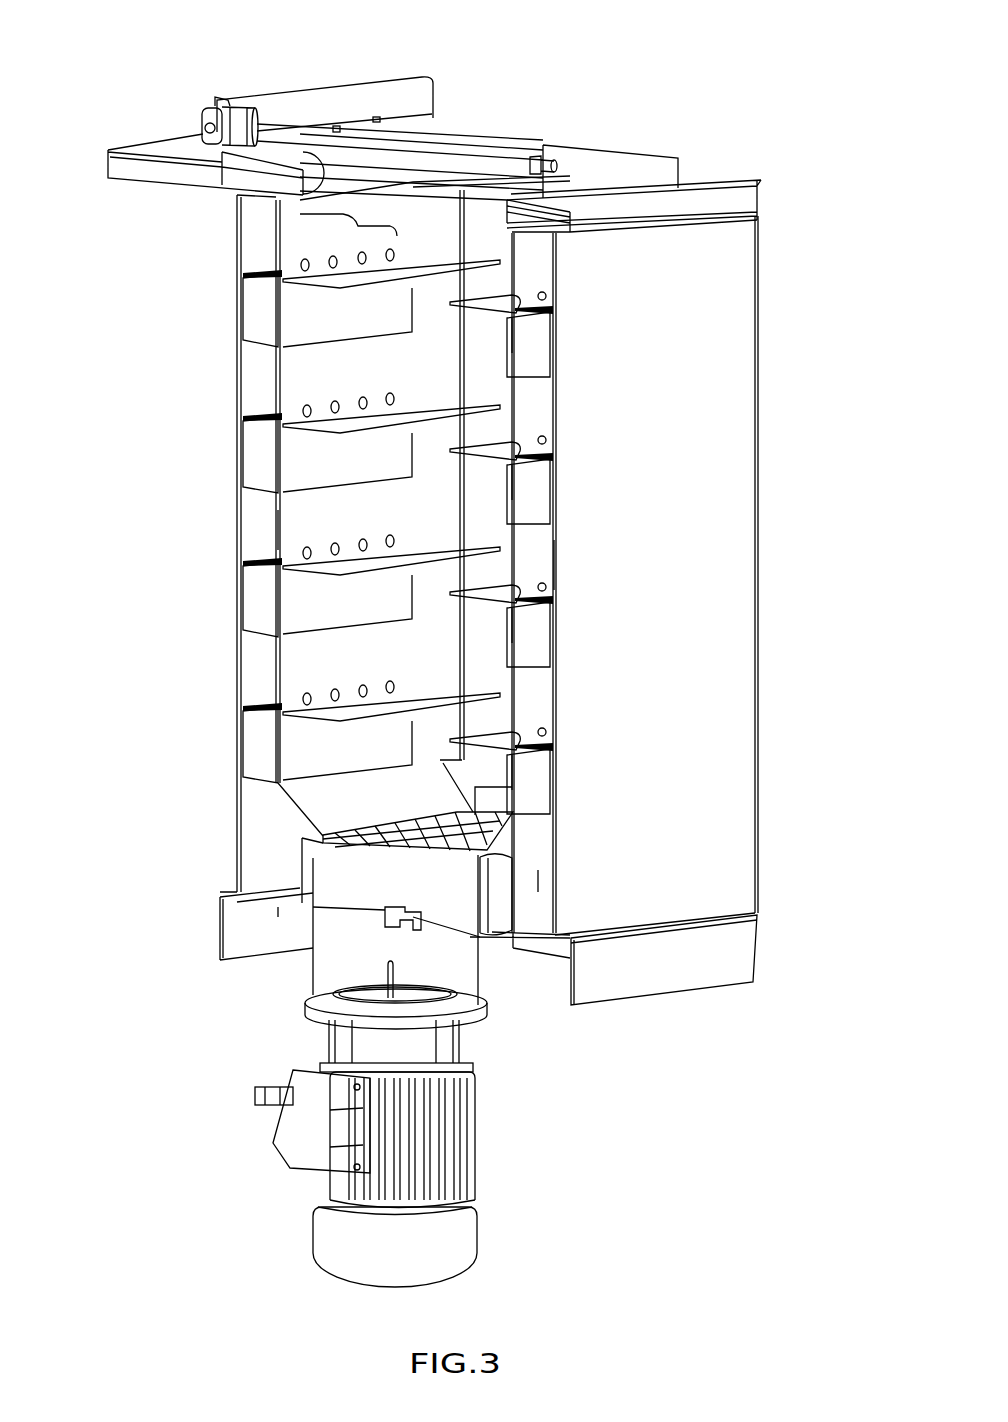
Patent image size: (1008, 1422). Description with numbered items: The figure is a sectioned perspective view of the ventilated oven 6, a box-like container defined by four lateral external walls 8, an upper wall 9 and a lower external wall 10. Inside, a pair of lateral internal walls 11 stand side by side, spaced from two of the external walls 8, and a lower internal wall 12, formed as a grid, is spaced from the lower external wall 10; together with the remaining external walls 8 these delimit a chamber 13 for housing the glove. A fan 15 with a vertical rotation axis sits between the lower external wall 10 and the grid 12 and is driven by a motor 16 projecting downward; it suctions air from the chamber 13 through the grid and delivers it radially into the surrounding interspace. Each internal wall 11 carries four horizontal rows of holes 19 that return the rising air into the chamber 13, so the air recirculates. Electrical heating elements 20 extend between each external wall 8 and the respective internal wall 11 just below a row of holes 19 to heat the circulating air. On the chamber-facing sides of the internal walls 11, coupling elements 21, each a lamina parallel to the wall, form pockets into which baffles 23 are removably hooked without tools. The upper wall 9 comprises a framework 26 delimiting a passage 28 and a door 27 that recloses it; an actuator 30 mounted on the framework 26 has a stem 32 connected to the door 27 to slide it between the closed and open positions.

The oven 6 is at (296, 49).
The lateral external walls 8 is at (237, 383).
The upper wall 9 is at (712, 160).
The lower external wall 10 is at (530, 940).
The lateral internal walls 11 is at (276, 532).
The lower internal wall 12 is at (310, 818).
The chamber 13 is at (412, 213).
The fan 15 is at (372, 883).
The motor 16 is at (475, 1130).
The holes 19 is at (390, 249).
The electrical heating elements 20 is at (253, 298).
The coupling elements 21 is at (298, 330).
The baffles 23 is at (500, 290).
The framework 26 is at (722, 182).
The door 27 is at (608, 170).
The passage 28 is at (243, 127).
The actuator 30 is at (266, 101).
The stem 32 is at (363, 140).